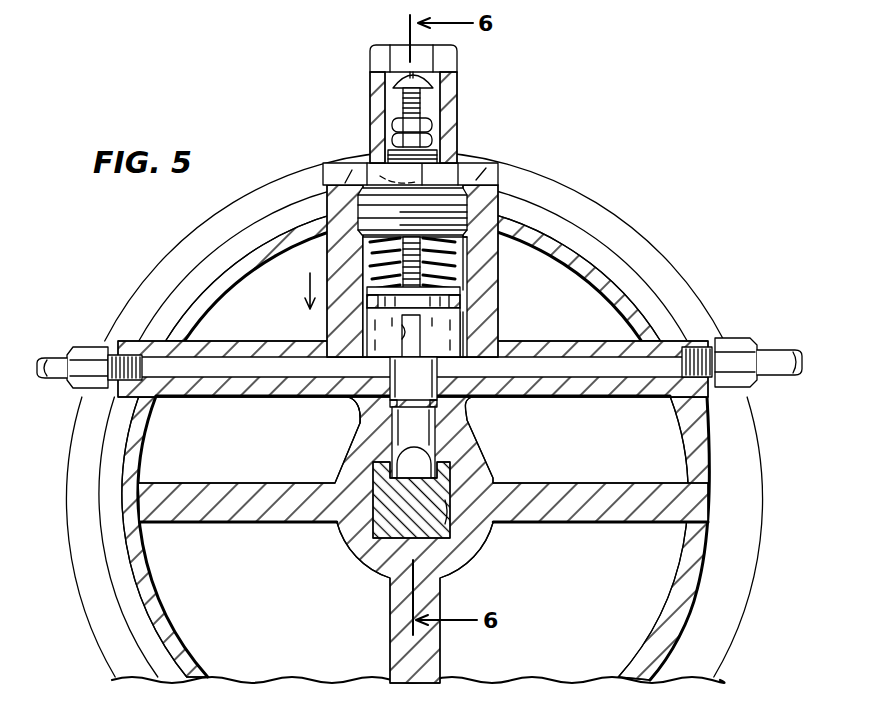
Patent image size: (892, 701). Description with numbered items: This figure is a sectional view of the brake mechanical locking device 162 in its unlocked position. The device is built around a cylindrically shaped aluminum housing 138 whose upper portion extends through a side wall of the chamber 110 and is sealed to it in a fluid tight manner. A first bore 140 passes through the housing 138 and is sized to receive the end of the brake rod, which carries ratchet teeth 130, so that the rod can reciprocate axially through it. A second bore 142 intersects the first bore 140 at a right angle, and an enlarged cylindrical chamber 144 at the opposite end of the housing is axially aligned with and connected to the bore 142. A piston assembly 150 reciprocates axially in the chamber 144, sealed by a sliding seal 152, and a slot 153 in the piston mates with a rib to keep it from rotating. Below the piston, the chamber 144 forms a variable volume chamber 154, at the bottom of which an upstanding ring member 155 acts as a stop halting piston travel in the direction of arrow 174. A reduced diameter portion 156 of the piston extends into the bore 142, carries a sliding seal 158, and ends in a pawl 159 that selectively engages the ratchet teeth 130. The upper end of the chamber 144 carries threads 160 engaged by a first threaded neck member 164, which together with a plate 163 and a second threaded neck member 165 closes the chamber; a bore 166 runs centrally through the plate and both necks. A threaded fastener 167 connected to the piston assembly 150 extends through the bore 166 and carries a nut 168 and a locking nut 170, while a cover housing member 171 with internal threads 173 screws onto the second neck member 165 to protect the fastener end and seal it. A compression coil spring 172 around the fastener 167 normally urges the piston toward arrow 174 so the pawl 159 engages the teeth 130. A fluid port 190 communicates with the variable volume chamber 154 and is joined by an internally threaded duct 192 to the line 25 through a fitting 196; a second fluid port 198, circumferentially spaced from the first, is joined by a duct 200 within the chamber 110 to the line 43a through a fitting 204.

The chamber 110 is at (695, 208).
The ratchet teeth 130 is at (450, 468).
The housing 138 is at (323, 237).
The first bore 140 is at (452, 512).
The second bore 142 is at (392, 431).
The cylindrical chamber 144 is at (455, 281).
The piston assembly 150 is at (462, 294).
The sliding seal 152 is at (462, 304).
The slot 153 is at (377, 355).
The variable volume chamber 154 is at (403, 343).
The upstanding ring member 155 is at (429, 337).
The reduced diameter portion 156 is at (412, 378).
The sliding seal 158 is at (440, 426).
The pawl 159 is at (415, 462).
The threads 160 is at (495, 203).
The mechanical locking device 162 is at (337, 118).
The plate 163 is at (482, 172).
The first threaded neck member 164 is at (473, 240).
The second threaded neck member 165 is at (397, 157).
The bore 166 is at (362, 153).
The threaded fastener 167 is at (420, 108).
The nut 168 is at (458, 117).
The locking nut 170 is at (433, 138).
The cover housing member 171 is at (458, 60).
The compression coil spring 172 is at (383, 262).
The internal threads 173 is at (372, 165).
The arrow 174 is at (307, 283).
The fluid port 190 is at (495, 334).
The duct 192 is at (610, 362).
The fitting 196 is at (733, 338).
The fluid port 198 is at (348, 396).
The duct 200 is at (413, 512).
The fitting 204 is at (88, 347).
The line 25 is at (778, 355).
The line 43a is at (52, 378).